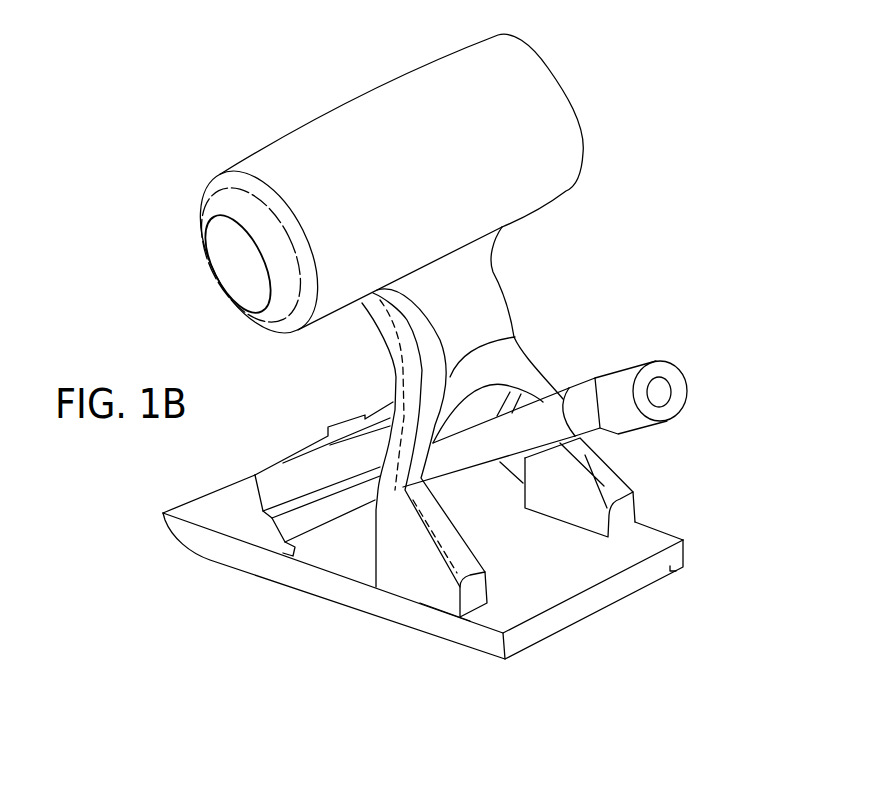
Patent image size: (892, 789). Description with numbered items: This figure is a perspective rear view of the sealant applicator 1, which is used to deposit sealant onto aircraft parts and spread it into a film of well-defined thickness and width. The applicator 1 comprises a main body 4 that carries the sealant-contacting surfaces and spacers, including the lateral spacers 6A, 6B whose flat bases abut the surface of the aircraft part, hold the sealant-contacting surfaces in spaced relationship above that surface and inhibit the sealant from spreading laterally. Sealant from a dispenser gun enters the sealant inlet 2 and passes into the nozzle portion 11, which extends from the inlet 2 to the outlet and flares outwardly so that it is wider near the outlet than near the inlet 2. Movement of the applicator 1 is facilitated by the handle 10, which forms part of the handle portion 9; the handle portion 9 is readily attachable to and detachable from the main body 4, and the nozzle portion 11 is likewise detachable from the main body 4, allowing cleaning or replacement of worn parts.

The sealant applicator 1 is at (658, 172).
The sealant inlet 2 is at (667, 392).
The main body 4 is at (350, 555).
The lateral spacer 6A is at (683, 567).
The lateral spacer 6B is at (463, 637).
The handle portion 9 is at (400, 115).
The handle 10 is at (300, 158).
The nozzle portion 11 is at (498, 458).